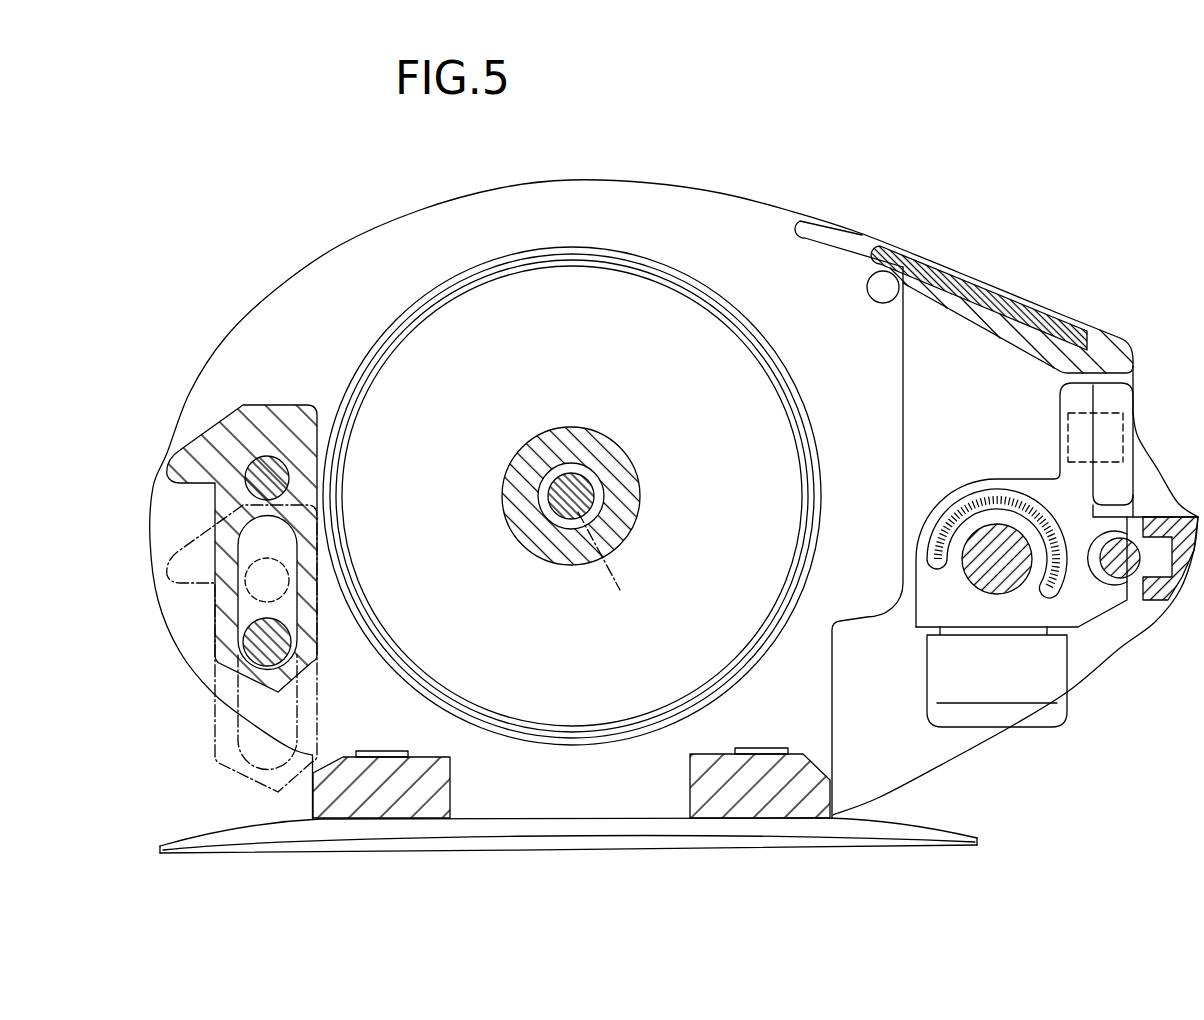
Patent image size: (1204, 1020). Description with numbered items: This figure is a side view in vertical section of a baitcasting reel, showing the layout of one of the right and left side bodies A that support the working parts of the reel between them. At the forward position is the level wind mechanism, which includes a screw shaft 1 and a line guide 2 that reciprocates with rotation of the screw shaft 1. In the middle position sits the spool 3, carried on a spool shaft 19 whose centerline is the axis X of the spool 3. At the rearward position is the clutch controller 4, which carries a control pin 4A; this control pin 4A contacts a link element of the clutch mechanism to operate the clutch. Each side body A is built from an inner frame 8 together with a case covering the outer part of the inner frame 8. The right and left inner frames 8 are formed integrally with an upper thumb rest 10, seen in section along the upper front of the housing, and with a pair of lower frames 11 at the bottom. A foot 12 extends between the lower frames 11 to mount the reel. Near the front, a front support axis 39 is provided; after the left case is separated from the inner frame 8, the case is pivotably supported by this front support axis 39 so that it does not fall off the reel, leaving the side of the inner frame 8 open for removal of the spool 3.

The screw shaft 1 is at (998, 545).
The line guide 2 is at (948, 493).
The spool 3 is at (773, 413).
The clutch controller 4 is at (292, 413).
The control pin 4A is at (262, 462).
The inner frame 8 is at (320, 277).
The upper thumb rest 10 is at (1003, 290).
The lower frame 11 is at (438, 792).
The foot 12 is at (593, 840).
The spool shaft 19 is at (592, 490).
The front support axis 39 is at (1114, 568).
The side body A is at (258, 308).
The axis of the spool X is at (607, 570).